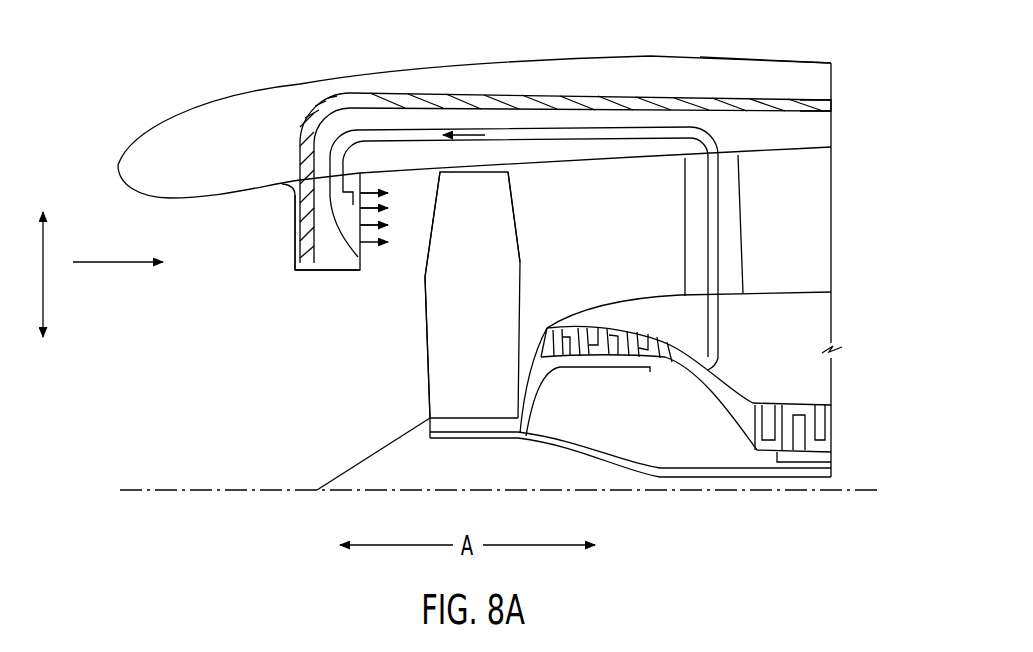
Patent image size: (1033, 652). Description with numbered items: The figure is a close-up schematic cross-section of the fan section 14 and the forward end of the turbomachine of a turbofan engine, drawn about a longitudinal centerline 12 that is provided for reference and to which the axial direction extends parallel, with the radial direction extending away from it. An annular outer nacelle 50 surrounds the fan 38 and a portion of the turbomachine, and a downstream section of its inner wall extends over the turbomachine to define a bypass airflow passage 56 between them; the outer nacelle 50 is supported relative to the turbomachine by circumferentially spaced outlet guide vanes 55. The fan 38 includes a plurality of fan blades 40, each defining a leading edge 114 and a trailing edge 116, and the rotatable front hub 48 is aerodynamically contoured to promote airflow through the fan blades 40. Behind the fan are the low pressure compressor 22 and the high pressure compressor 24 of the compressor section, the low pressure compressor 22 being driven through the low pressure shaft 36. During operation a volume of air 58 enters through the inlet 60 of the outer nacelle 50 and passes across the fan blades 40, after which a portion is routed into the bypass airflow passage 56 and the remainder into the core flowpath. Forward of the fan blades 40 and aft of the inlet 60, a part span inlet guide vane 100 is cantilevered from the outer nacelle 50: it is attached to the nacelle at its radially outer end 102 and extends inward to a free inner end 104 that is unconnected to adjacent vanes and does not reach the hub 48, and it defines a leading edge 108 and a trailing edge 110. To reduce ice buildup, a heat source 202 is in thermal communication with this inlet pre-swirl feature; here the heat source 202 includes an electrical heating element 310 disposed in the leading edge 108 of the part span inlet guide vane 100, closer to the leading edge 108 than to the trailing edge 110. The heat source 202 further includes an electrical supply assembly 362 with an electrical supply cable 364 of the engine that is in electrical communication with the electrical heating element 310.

The longitudinal centerline 12 is at (197, 492).
The fan section 14 is at (353, 90).
The low pressure compressor 22 is at (673, 335).
The high pressure compressor 24 is at (785, 388).
The low pressure shaft 36 is at (683, 478).
The fan 38 is at (488, 142).
The fan blade 40 is at (512, 288).
The front nacelle or hub 48 is at (337, 478).
The outer nacelle 50 is at (462, 62).
The outlet guide vane 55 is at (745, 240).
The bypass airflow passage 56 is at (650, 252).
The volume of air 58 is at (130, 265).
The inlet 60 is at (108, 218).
The part span inlet guide vane 100 is at (292, 173).
The outer end 102 is at (348, 165).
The inner end 104 is at (327, 292).
The leading edge 108 is at (266, 252).
The trailing edge 110 is at (398, 279).
The leading edge 114 is at (420, 274).
The trailing edge 116 is at (525, 256).
The heat source 202 is at (286, 200).
The electrical heating element 310 is at (298, 262).
The electrical supply assembly 362 is at (755, 70).
The electrical supply cable 364 is at (818, 96).